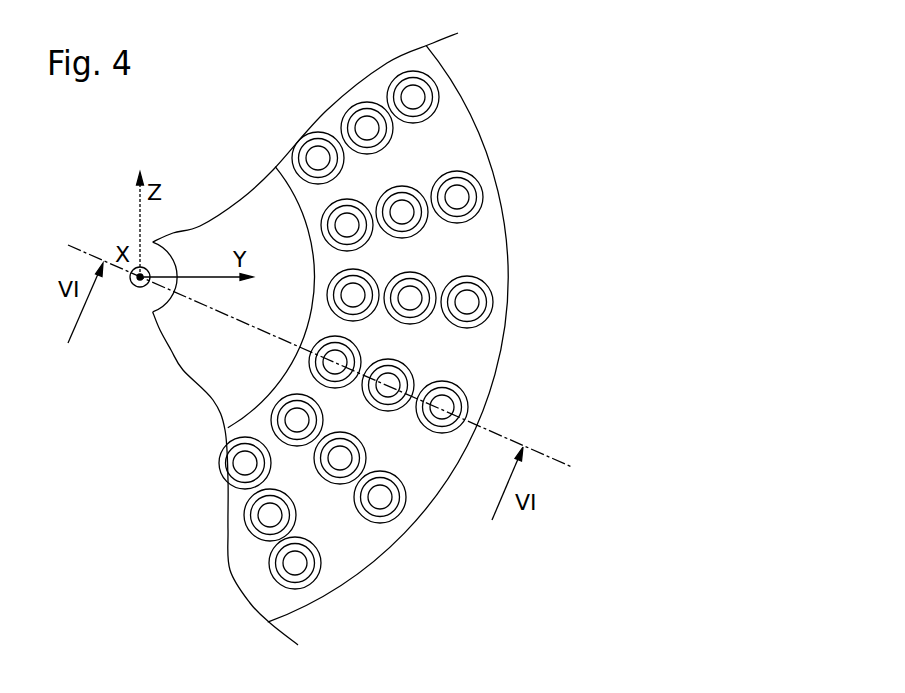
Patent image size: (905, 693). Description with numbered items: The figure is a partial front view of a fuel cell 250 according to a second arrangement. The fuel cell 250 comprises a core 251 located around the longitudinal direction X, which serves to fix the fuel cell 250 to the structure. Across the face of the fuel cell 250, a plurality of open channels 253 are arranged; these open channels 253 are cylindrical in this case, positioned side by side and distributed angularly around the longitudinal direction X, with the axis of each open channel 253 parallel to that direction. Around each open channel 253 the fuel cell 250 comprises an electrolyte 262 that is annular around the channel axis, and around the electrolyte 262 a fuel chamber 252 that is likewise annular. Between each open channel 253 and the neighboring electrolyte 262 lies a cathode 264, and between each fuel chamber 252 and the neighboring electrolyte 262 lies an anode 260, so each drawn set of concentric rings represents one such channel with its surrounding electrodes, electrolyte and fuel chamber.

The fuel cell 250 is at (548, 338).
The core 251 is at (198, 356).
The fuel chamber 252 is at (427, 117).
The open channel 253 is at (412, 95).
The anode 260 is at (472, 207).
The electrolyte 262 is at (430, 100).
The cathode 264 is at (468, 183).